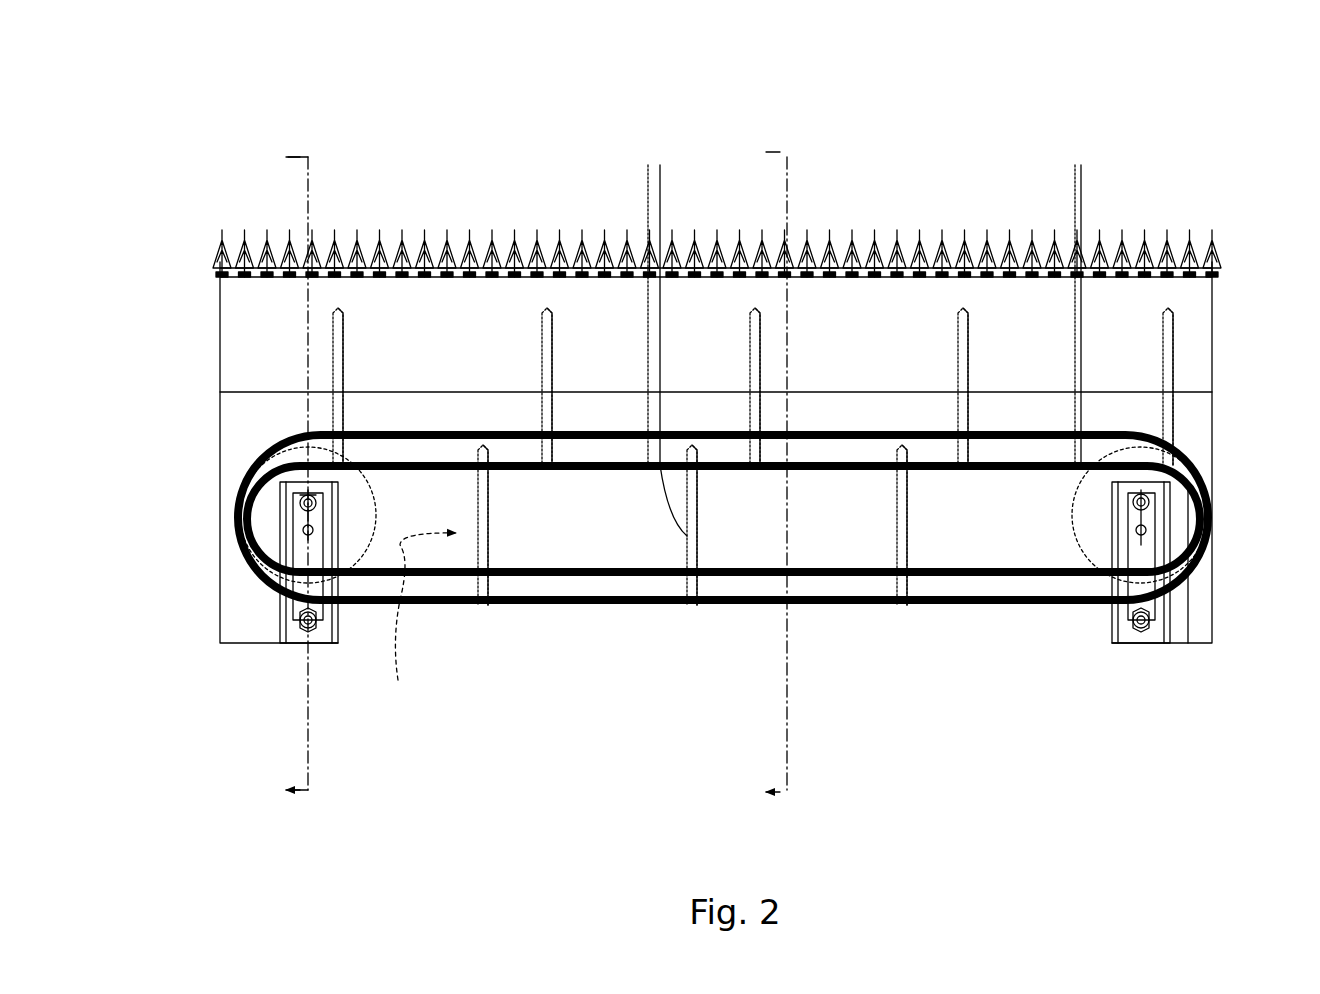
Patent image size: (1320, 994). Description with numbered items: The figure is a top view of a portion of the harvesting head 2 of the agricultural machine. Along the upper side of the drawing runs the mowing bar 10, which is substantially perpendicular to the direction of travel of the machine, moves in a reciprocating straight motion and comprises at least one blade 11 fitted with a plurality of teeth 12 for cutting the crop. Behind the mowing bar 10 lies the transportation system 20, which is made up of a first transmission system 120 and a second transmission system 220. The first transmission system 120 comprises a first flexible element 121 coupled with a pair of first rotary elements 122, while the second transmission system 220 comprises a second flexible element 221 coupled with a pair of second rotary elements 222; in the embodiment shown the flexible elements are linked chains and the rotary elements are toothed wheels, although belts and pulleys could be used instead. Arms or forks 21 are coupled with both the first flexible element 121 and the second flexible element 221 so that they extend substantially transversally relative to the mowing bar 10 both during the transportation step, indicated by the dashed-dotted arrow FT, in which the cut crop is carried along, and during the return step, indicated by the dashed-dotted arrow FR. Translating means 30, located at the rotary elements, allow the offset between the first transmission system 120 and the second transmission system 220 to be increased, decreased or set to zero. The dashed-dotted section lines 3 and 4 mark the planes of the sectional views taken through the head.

The harvesting head 2 is at (900, 118).
The mowing bar 10 is at (1222, 272).
The blade 11 is at (674, 222).
The teeth 12 is at (535, 230).
The transportation step arrow FT is at (1190, 403).
The section line 3 is at (779, 475).
The section line 4 is at (299, 474).
The transportation system 20 is at (691, 455).
The first transmission system 120 is at (691, 565).
The first flexible element 121 is at (460, 432).
The first rotary elements 122 is at (247, 487).
The second flexible element 221 is at (966, 604).
The second transmission system 220 is at (684, 628).
The second rotary elements 222 is at (262, 556).
The translating means 30 is at (320, 640).
The arm or fork 21 is at (338, 312).
The return step arrow FR is at (420, 621).